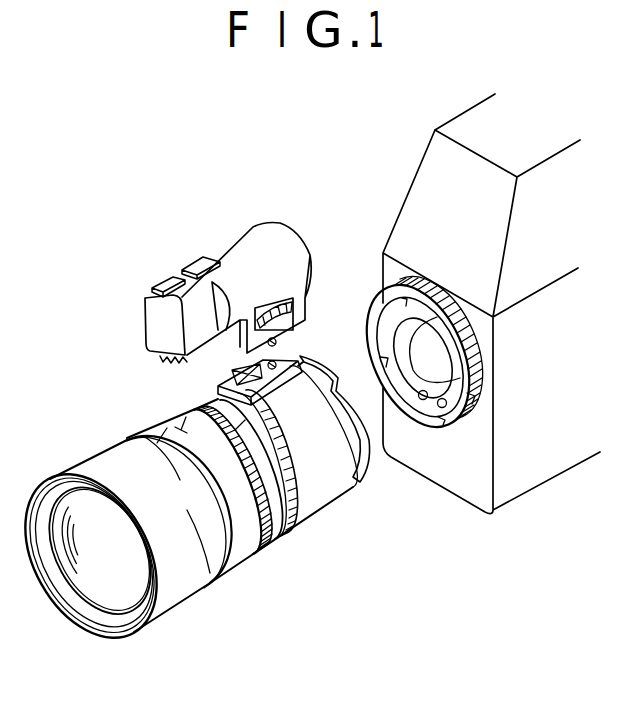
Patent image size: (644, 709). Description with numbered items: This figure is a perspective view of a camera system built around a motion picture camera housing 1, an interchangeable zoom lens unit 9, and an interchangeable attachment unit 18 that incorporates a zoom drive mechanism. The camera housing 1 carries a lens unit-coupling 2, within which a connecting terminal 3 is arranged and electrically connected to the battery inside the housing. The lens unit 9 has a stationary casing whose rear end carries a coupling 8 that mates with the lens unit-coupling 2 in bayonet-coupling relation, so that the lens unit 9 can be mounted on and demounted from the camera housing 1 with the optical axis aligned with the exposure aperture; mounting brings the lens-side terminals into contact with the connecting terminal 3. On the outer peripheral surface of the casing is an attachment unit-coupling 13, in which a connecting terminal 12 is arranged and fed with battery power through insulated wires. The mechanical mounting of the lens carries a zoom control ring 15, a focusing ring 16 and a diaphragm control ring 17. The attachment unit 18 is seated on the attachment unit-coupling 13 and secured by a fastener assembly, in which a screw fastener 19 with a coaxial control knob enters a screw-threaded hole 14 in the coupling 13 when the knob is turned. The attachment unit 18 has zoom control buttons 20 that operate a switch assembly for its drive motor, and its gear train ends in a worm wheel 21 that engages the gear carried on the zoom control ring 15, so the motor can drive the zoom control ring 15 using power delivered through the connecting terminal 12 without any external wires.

The motion picture camera housing 1 is at (547, 462).
The lens unit-coupling 2 is at (432, 422).
The connecting terminal 3 is at (442, 399).
The coupling 8 is at (337, 362).
The interchangeable zoom lens unit 9 is at (320, 495).
The connecting terminal 12 is at (250, 369).
The attachment unit-coupling 13 is at (277, 383).
The screw-threaded hole 14 is at (277, 360).
The zoom control ring 15 is at (243, 557).
The focusing ring 16 is at (175, 600).
The diaphragm control ring 17 is at (273, 445).
The interchangeable attachment unit 18 is at (255, 237).
The screw fastener 19 is at (288, 345).
The zoom control buttons 20 is at (165, 287).
The worm wheel 21 is at (160, 357).